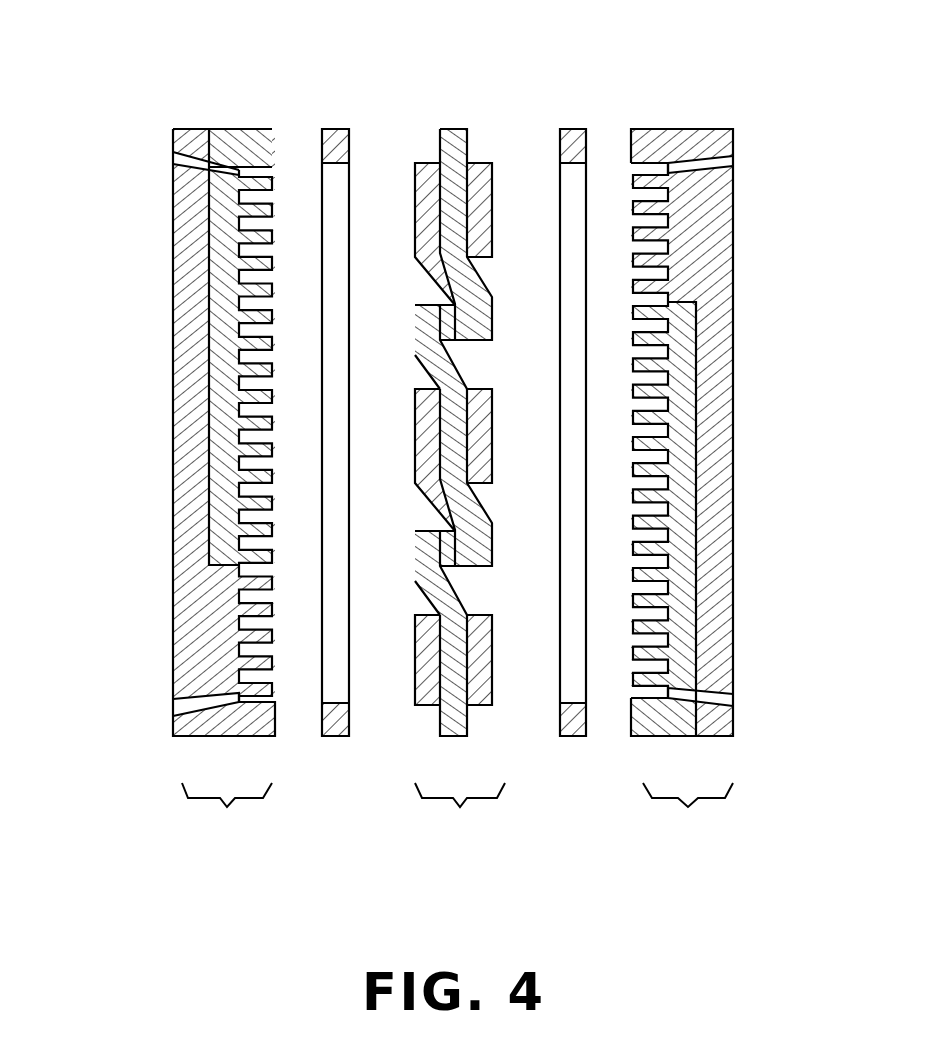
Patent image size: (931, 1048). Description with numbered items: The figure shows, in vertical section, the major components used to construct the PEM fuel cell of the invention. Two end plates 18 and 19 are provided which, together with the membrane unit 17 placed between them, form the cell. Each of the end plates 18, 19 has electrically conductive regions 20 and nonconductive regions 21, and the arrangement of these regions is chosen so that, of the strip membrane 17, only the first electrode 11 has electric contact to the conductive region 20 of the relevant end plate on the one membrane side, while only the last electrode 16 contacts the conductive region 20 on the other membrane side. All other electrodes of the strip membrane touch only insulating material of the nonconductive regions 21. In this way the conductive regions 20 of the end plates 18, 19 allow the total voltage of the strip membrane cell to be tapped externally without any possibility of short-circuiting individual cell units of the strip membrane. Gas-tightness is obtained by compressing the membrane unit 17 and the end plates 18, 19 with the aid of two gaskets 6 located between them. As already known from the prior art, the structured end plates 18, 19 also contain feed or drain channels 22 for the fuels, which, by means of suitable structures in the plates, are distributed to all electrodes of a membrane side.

The gasket 6 is at (333, 140).
The first electrode 11 is at (481, 163).
The last electrode 16 is at (427, 700).
The membrane unit 17 is at (436, 452).
The end plate 18 is at (224, 493).
The end plate 19 is at (680, 491).
The electrically conductive region 20 is at (213, 593).
The nonconductive region 21 is at (218, 358).
The feed or drain channel 22 is at (173, 155).